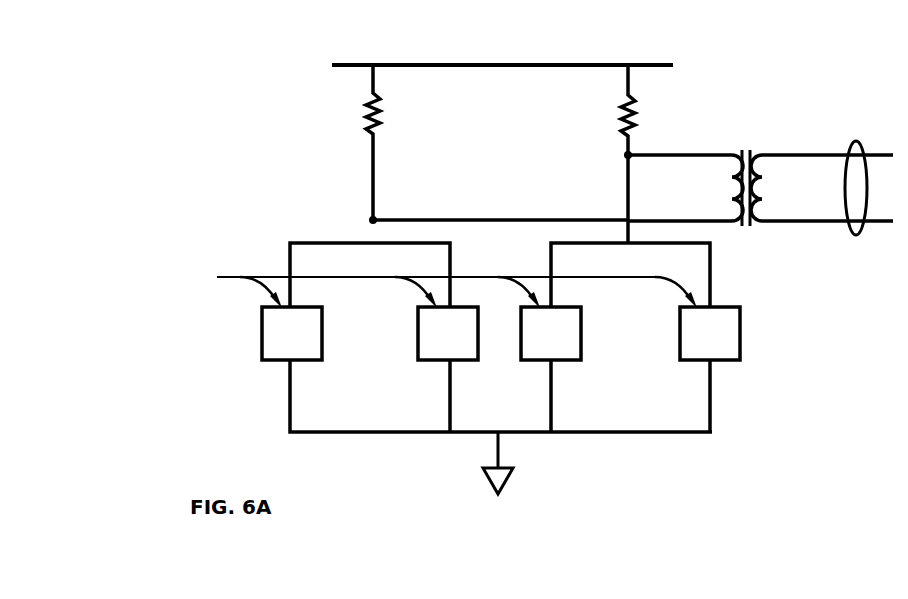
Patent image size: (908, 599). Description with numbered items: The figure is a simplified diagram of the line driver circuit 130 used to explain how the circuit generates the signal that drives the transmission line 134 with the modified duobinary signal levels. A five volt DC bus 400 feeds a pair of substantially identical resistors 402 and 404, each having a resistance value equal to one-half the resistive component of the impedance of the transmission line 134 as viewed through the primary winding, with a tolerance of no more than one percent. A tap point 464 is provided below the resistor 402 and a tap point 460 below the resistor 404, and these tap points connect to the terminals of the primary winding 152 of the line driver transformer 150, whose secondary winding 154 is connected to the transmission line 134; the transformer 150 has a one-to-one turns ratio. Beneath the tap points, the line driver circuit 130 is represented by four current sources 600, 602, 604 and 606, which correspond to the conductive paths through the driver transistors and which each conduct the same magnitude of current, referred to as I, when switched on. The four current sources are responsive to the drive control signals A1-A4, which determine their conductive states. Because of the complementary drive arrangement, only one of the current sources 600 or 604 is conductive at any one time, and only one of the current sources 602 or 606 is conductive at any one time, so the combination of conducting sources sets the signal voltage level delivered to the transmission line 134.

The +5 volt DC bus 400 is at (658, 66).
The resistor 402 is at (368, 118).
The resistor 404 is at (624, 118).
The tap point 460 is at (624, 156).
The tap point 464 is at (370, 220).
The primary winding 152 is at (732, 180).
The secondary winding 154 is at (762, 180).
The transmission line 134 is at (858, 143).
The line driver transformer 150 is at (758, 232).
The line driver circuit 130 is at (268, 184).
The current source 600 is at (322, 349).
The current source 602 is at (418, 325).
The current source 604 is at (581, 350).
The current source 606 is at (740, 340).
The drive control signals A1-A4 is at (408, 286).